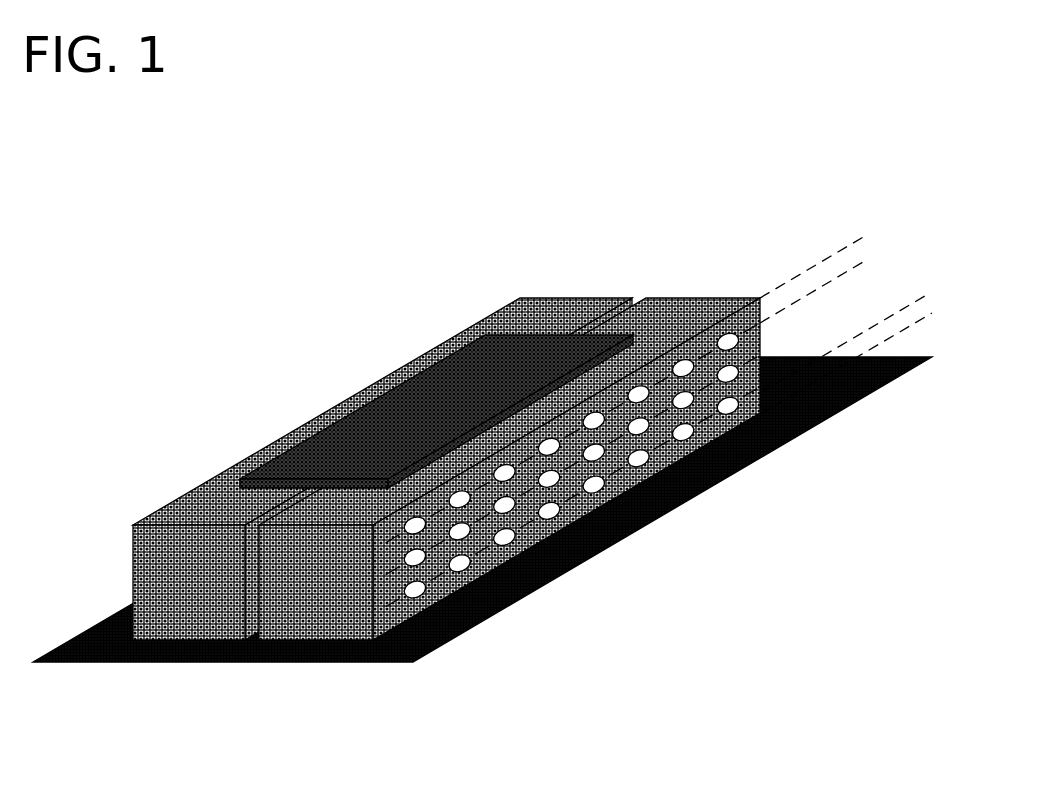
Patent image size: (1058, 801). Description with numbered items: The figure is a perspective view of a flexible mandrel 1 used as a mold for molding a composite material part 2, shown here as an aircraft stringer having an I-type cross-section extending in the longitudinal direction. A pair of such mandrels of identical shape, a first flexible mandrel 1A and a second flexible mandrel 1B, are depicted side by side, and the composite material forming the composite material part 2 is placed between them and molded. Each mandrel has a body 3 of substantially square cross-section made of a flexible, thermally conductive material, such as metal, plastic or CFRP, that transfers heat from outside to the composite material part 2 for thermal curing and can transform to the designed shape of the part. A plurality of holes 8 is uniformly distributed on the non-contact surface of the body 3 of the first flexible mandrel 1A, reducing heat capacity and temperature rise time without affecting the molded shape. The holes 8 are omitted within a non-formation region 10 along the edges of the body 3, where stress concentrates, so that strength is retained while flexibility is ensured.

The flexible mandrel 1 is at (484, 417).
The first flexible mandrel 1A is at (509, 433).
The second flexible mandrel 1B is at (572, 297).
The composite material part 2 is at (383, 422).
The body 3 is at (186, 617).
The hole 8 is at (646, 466).
The non-formation region 10 is at (847, 300).